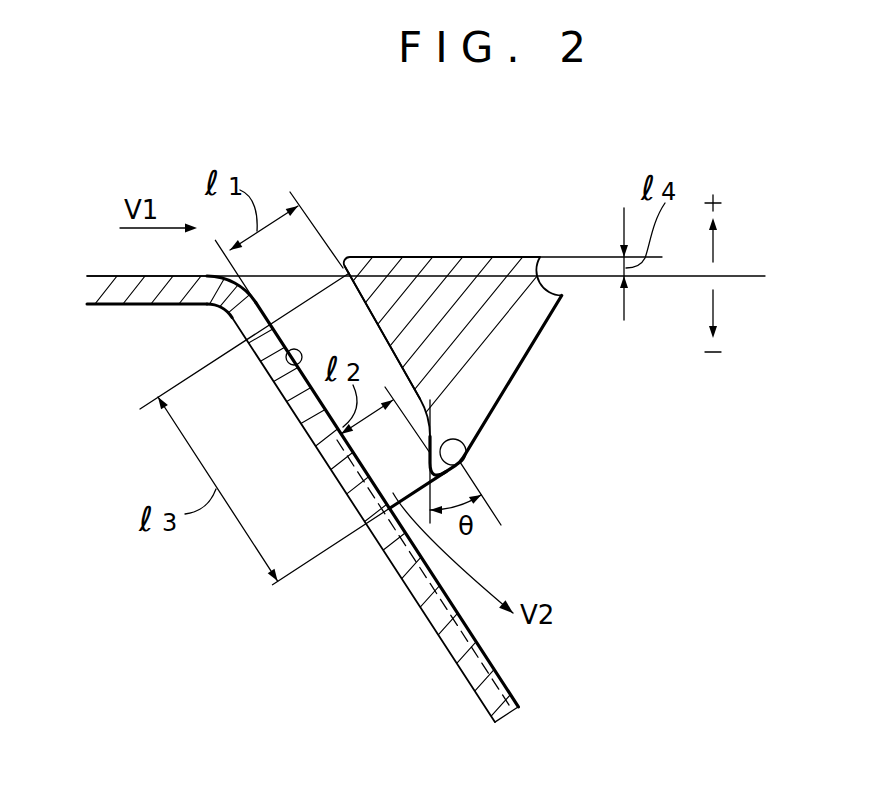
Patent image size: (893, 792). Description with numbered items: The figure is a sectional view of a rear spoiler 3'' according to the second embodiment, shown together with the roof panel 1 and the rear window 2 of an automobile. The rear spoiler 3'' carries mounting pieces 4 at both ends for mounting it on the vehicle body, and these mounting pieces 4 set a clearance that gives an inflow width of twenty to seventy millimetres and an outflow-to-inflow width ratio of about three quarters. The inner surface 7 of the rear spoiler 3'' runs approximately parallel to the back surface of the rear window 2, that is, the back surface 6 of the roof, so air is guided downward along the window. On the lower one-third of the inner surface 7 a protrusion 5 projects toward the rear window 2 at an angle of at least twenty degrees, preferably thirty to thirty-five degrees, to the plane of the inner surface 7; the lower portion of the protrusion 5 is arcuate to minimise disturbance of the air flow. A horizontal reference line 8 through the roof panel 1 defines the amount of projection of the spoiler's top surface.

The roof panel 1 is at (132, 290).
The rear window 2 is at (455, 638).
The rear spoiler 3'' is at (412, 370).
The mounting pieces 4 is at (303, 300).
The protrusion 5 is at (456, 441).
The back surface of the roof 6 is at (284, 387).
The inner surface 7 is at (371, 301).
The reference line 8 is at (748, 276).